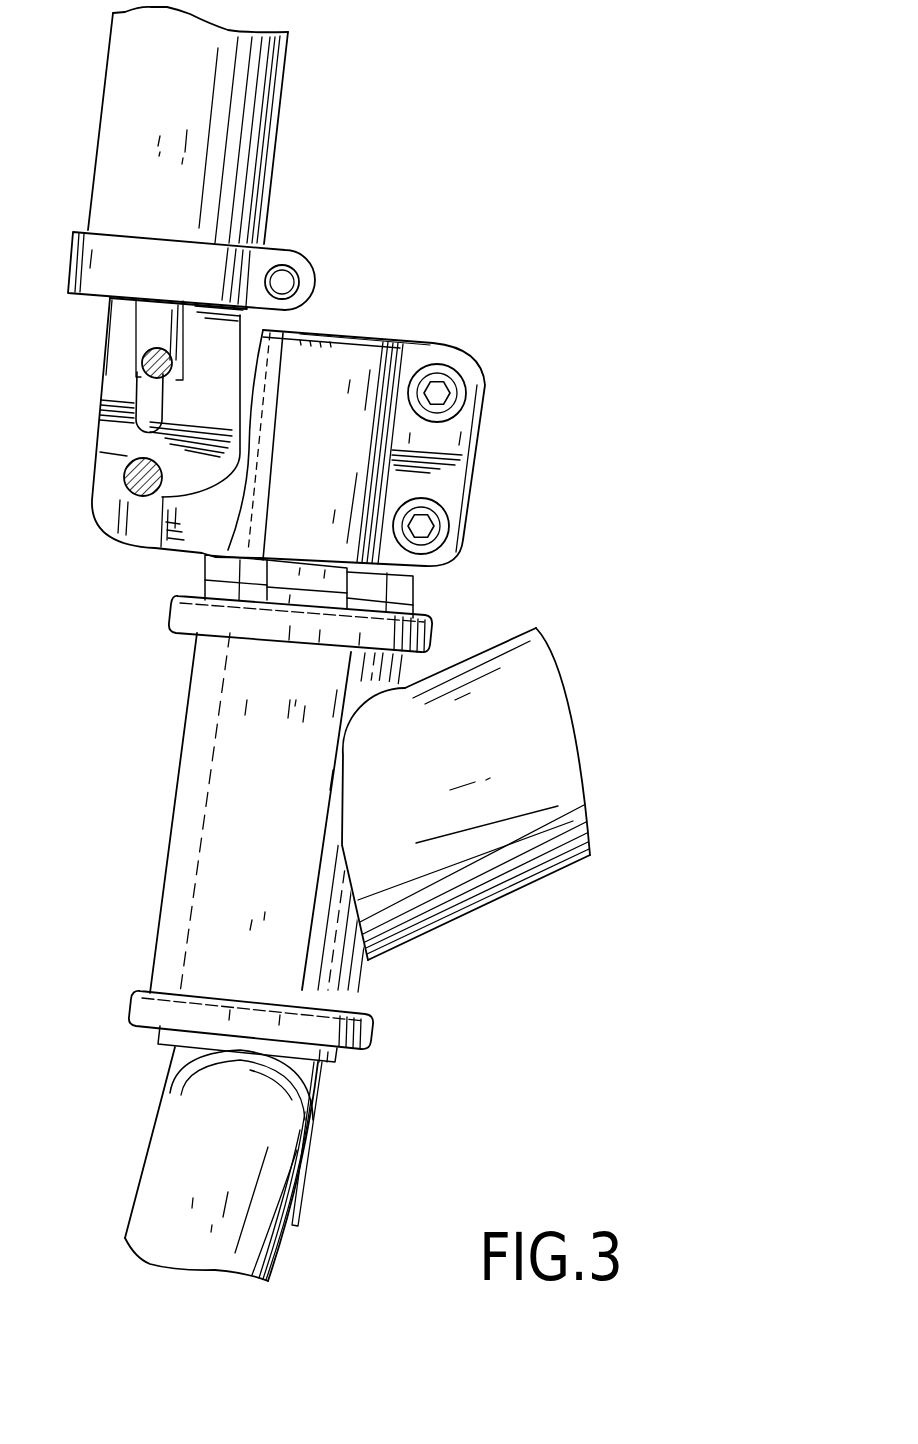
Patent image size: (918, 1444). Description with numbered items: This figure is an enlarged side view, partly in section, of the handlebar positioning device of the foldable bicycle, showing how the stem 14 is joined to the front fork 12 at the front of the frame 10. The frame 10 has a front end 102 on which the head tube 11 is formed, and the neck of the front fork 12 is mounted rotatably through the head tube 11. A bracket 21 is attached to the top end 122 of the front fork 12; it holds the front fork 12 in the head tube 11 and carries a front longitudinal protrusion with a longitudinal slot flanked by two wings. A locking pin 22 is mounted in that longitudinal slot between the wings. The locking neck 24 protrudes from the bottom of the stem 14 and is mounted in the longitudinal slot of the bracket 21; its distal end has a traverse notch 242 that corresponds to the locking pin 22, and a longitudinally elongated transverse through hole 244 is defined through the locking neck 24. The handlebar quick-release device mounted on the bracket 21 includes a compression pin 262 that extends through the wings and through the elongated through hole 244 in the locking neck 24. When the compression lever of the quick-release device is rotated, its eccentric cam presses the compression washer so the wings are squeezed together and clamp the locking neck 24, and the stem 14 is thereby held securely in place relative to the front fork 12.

The frame 10 is at (555, 730).
The front end 102 is at (407, 969).
The head tube 11 is at (187, 835).
The front fork 12 is at (163, 1201).
The stem 14 is at (242, 165).
The bracket 21 is at (347, 312).
The top end 122 is at (440, 335).
The locking pin 22 is at (122, 472).
The locking neck 24 is at (123, 337).
The traverse notch 242 is at (128, 463).
The longitudinally elongated transverse through hole 244 is at (134, 398).
The compression pin 262 is at (142, 367).